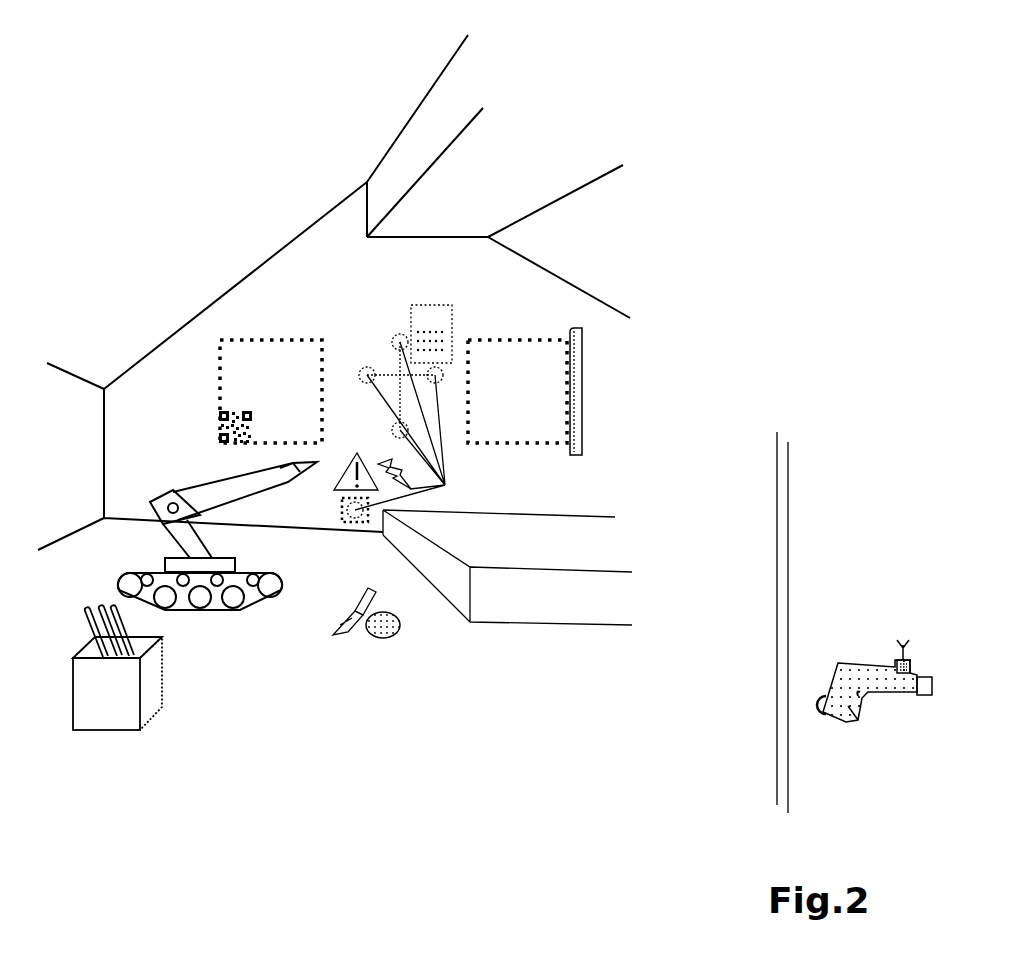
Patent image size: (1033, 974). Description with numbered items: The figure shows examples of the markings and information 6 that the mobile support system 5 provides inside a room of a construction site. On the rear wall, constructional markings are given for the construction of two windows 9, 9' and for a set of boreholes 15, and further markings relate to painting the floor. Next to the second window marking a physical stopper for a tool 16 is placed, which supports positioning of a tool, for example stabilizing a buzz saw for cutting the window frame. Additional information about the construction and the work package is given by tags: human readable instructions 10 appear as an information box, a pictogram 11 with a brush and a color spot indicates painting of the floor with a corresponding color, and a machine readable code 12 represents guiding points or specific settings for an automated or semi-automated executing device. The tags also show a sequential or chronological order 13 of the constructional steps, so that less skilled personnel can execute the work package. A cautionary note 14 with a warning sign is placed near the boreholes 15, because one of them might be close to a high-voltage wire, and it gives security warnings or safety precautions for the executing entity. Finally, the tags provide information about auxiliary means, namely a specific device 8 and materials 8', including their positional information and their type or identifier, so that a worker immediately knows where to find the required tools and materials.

The markings and information 6 is at (240, 220).
The cautionary note 14 is at (363, 445).
The window 9 is at (227, 364).
The window 9' is at (571, 378).
The human readable instructions 10 is at (438, 335).
The machine readable code 12 is at (220, 430).
The sequential or chronological order 13 is at (528, 408).
The boreholes 15 is at (445, 485).
The physical stopper for a tool 16 is at (578, 398).
The mobile support system 5 is at (197, 580).
The pictogram 11 is at (407, 645).
The materials 8' is at (158, 693).
The device 8 is at (879, 707).